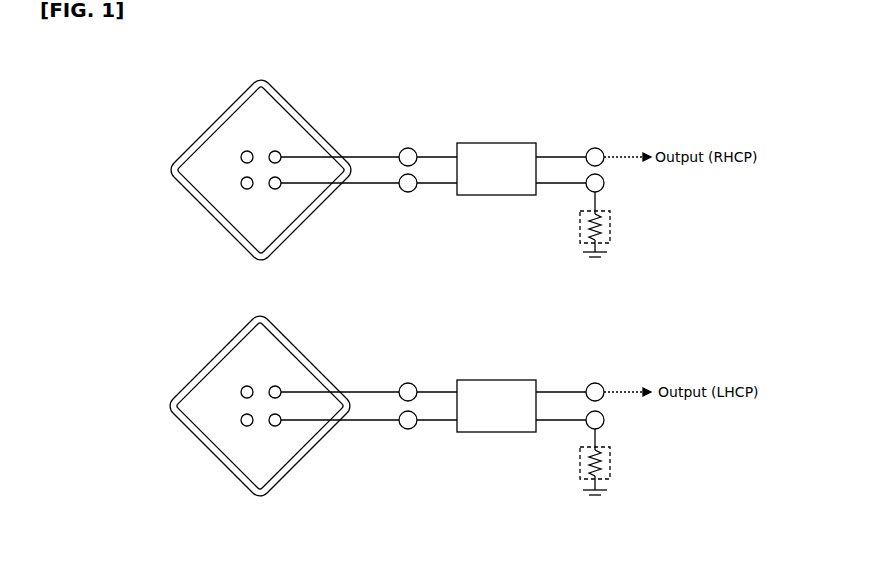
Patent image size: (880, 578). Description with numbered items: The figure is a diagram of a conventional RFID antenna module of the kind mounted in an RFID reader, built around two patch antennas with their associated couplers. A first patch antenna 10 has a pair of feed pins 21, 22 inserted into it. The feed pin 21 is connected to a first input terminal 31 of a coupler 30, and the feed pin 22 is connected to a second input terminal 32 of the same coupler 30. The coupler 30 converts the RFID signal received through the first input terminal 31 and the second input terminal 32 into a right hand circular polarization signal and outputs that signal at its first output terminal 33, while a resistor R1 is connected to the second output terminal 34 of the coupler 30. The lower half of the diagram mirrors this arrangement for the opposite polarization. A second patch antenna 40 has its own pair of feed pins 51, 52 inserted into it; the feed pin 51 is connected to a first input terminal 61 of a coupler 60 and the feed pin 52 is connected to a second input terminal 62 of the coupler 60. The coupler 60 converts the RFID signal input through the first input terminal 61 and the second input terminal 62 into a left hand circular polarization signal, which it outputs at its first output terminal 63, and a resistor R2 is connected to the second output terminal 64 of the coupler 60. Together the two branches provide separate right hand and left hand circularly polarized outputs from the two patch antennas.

The first patch antenna 10 is at (217, 121).
The feed pin 21 is at (282, 151).
The feed pin 22 is at (280, 188).
The coupler 30 is at (496, 143).
The first input terminal 31 is at (408, 147).
The second input terminal 32 is at (409, 193).
The first output terminal 33 is at (594, 147).
The second output terminal 34 is at (605, 184).
The resistor R1 is at (612, 228).
The second patch antenna 40 is at (217, 356).
The feed pin 51 is at (282, 386).
The feed pin 52 is at (280, 425).
The coupler 60 is at (496, 380).
The first input terminal 61 is at (408, 382).
The second input terminal 62 is at (409, 430).
The first output terminal 63 is at (594, 382).
The second output terminal 64 is at (605, 421).
The resistor R2 is at (612, 467).